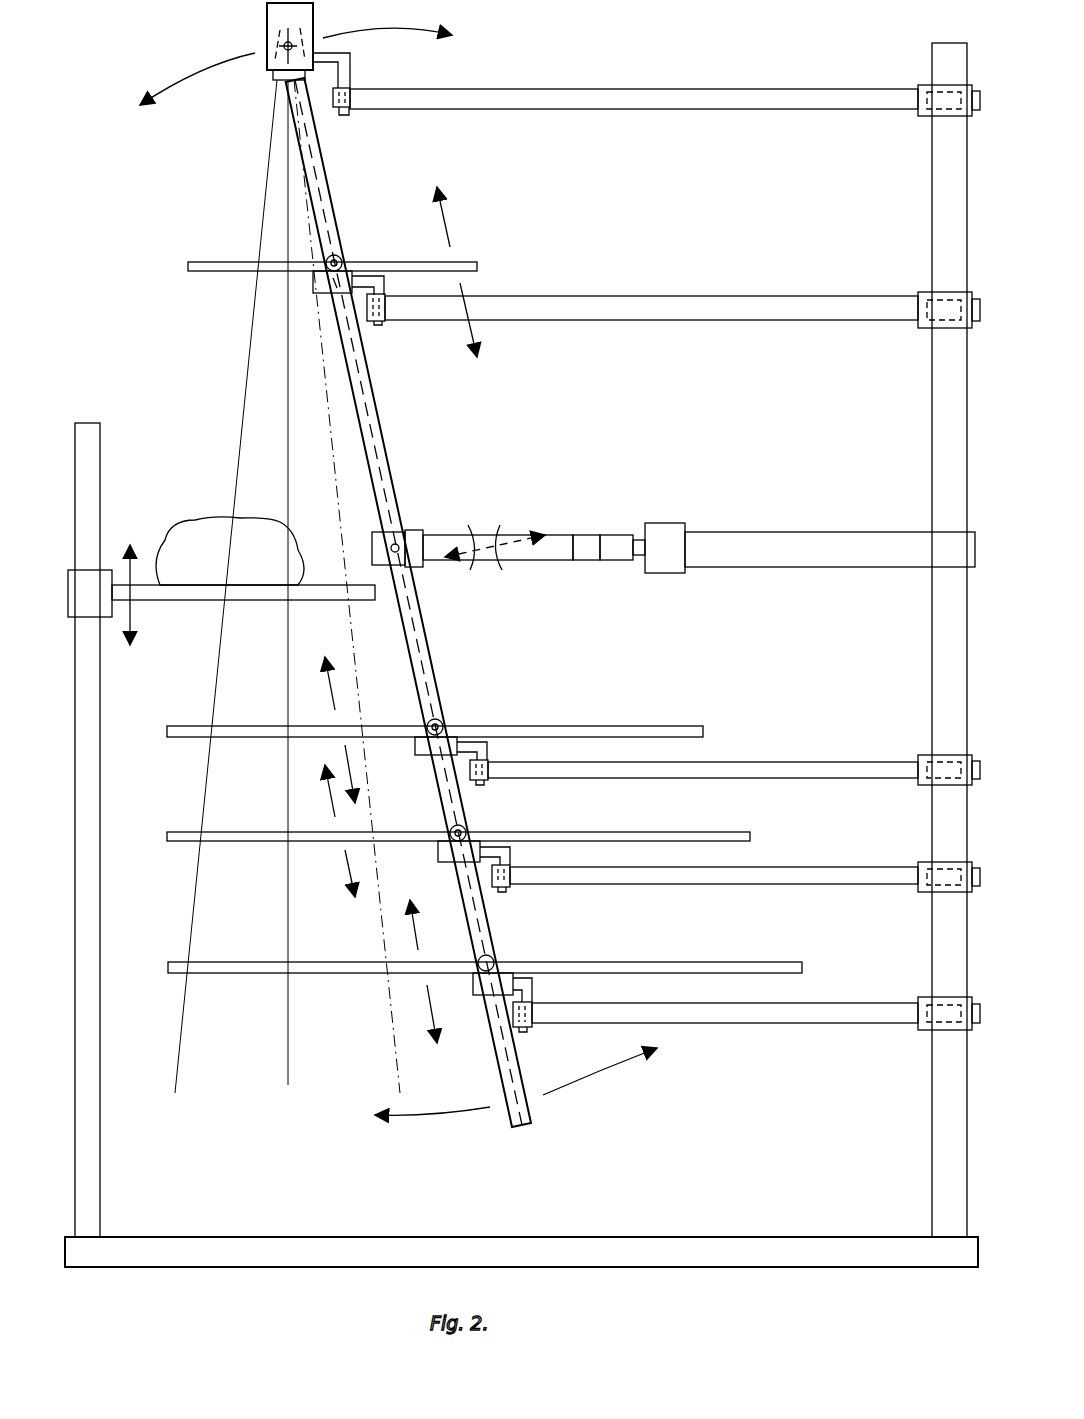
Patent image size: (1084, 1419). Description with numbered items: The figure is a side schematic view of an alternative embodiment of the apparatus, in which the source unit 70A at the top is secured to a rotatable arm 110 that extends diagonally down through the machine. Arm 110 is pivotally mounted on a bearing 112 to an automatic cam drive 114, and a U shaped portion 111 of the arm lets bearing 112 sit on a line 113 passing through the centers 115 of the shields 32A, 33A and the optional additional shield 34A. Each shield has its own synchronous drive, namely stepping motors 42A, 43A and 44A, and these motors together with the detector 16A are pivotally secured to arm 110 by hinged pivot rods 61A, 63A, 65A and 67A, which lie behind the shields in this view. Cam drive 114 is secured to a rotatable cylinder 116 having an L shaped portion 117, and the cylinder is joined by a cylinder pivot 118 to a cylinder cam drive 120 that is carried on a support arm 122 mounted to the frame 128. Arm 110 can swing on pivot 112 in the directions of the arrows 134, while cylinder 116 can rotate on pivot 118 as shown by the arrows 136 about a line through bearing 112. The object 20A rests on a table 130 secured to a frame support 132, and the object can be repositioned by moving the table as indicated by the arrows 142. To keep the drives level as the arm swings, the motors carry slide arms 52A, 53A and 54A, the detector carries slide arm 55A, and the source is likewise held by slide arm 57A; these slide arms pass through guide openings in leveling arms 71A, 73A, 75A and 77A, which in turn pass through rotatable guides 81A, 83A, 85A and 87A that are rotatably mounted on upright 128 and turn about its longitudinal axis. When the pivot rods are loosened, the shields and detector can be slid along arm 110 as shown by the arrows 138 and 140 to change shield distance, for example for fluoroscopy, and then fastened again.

The drive head 70A is at (267, 18).
The arrows 134 is at (193, 72).
The slide arm 57A is at (347, 108).
The leveling arm 77A is at (808, 108).
The rotatable arm 110 is at (305, 152).
The additional shield 34A is at (195, 262).
The hinged pivot rod 65A is at (326, 258).
The centers 115 is at (345, 258).
The arrows 138 is at (450, 222).
The rotatable guide 85A is at (935, 290).
The stepping motor 44A is at (313, 284).
The leveling arm 75A is at (722, 322).
The slide arm 54A is at (382, 326).
The frame 128 is at (935, 425).
The line 113 is at (352, 398).
The object 20A is at (218, 520).
The U shaped portion 111 is at (382, 520).
The bearing 112 is at (415, 532).
The automatic cam drive 114 is at (372, 540).
The rotatable cylinder 116 is at (560, 538).
The cylinder pivot 118 is at (640, 540).
The support arm 122 is at (852, 532).
The table 130 is at (235, 598).
The arrows 136 is at (498, 562).
The L shaped portion 117 is at (590, 562).
The cylinder cam drive 120 is at (665, 573).
The arrows 142 is at (130, 618).
The hinged pivot rod 63A is at (427, 722).
The shield 33A is at (190, 727).
The stepping motor 43A is at (470, 742).
The rotatable guide 83A is at (940, 755).
The hinged pivot rod 61A is at (450, 828).
The shield 32A is at (190, 833).
The stepping motor 42A is at (495, 855).
The slide arm 53A is at (500, 772).
The leveling arm 73A is at (787, 778).
The rotatable guide 81A is at (945, 860).
The slide arm 52A is at (535, 886).
The leveling arm 71A is at (797, 885).
The arrows 140 is at (400, 935).
The hinged pivot rod 67A is at (492, 965).
The detector 16A is at (188, 975).
The slide arm 55A is at (528, 1030).
The rotatable guide 87A is at (948, 1032).
The frame support 132 is at (100, 1105).